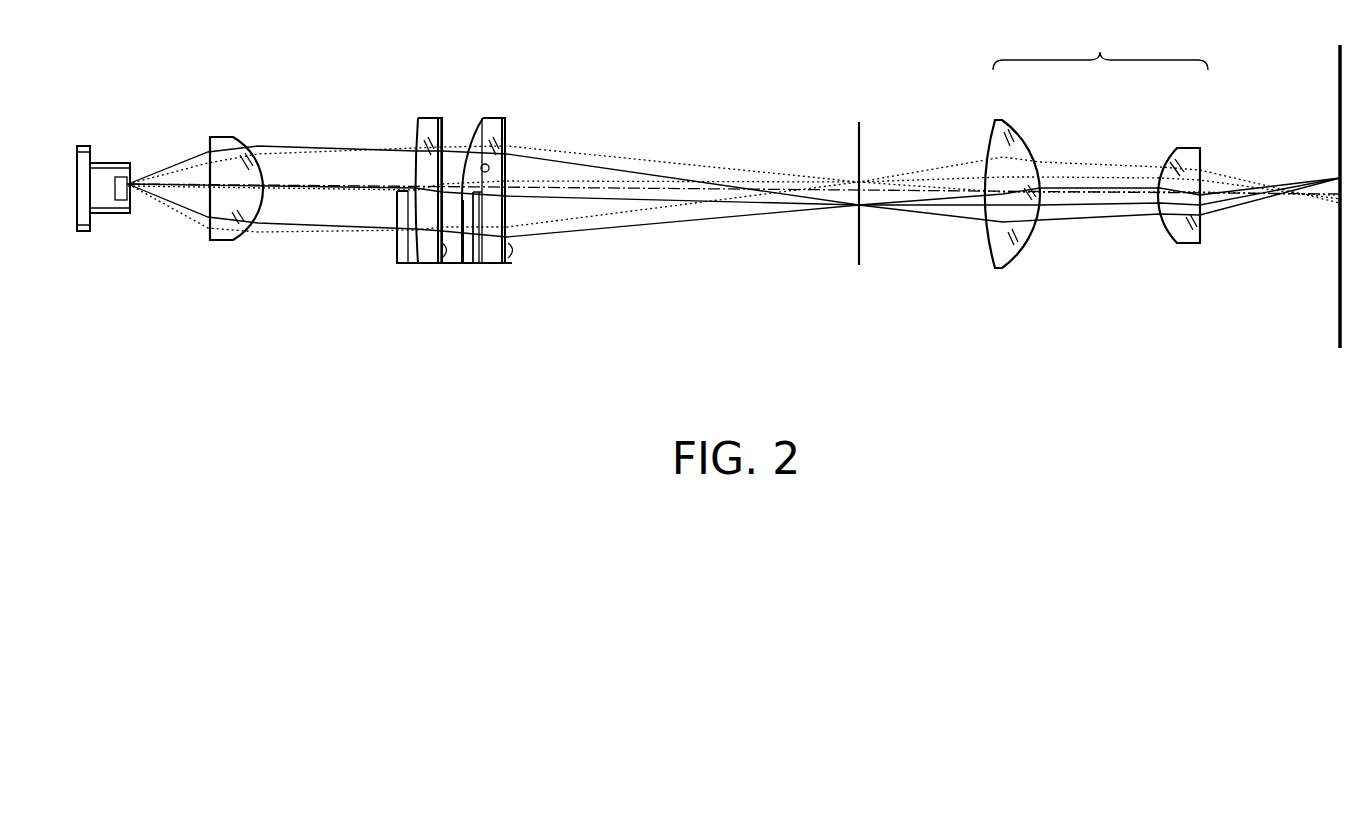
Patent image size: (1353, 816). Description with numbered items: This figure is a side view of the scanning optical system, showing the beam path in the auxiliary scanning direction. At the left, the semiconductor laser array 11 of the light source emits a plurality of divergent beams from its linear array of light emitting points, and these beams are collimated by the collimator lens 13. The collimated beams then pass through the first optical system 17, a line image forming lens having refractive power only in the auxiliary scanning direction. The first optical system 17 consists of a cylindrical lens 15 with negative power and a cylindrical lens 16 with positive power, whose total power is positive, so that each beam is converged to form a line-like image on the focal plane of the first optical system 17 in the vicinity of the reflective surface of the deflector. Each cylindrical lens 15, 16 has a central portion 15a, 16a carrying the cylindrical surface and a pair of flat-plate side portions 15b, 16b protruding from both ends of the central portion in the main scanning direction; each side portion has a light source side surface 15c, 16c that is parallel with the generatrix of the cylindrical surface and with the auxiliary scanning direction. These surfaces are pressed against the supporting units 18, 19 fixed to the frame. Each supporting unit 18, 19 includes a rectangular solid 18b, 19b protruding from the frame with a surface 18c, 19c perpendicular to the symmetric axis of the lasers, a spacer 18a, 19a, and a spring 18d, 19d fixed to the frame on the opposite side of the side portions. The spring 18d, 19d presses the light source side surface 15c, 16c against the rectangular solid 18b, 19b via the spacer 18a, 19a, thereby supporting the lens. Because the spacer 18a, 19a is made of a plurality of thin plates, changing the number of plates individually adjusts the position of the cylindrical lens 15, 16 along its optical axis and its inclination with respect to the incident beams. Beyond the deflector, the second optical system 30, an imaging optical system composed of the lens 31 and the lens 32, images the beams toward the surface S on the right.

The semiconductor laser array 11 is at (112, 215).
The collimator lens 13 is at (227, 242).
The cylindrical lens 15 is at (436, 110).
The central portion 15a is at (417, 128).
The side portion 15b is at (417, 120).
The light source side surface 15c is at (416, 140).
The cylindrical lens 16 is at (496, 110).
The central portion 16a is at (468, 140).
The side portion 16b is at (502, 120).
The light source side surface 16c is at (490, 164).
The first optical system 17 is at (572, 372).
The supporting unit 18 is at (389, 292).
The spacer 18a is at (411, 270).
The rectangular solid 18b is at (398, 263).
The surface 18c is at (402, 247).
The spring 18d is at (448, 258).
The supporting unit 19 is at (474, 298).
The spacer 19a is at (483, 272).
The rectangular solid 19b is at (469, 262).
The surface 19c is at (463, 264).
The spring 19d is at (518, 258).
The second optical system 30 is at (1100, 47).
The lens 31 is at (1028, 137).
The lens 32 is at (1190, 147).
The screen S is at (1340, 97).